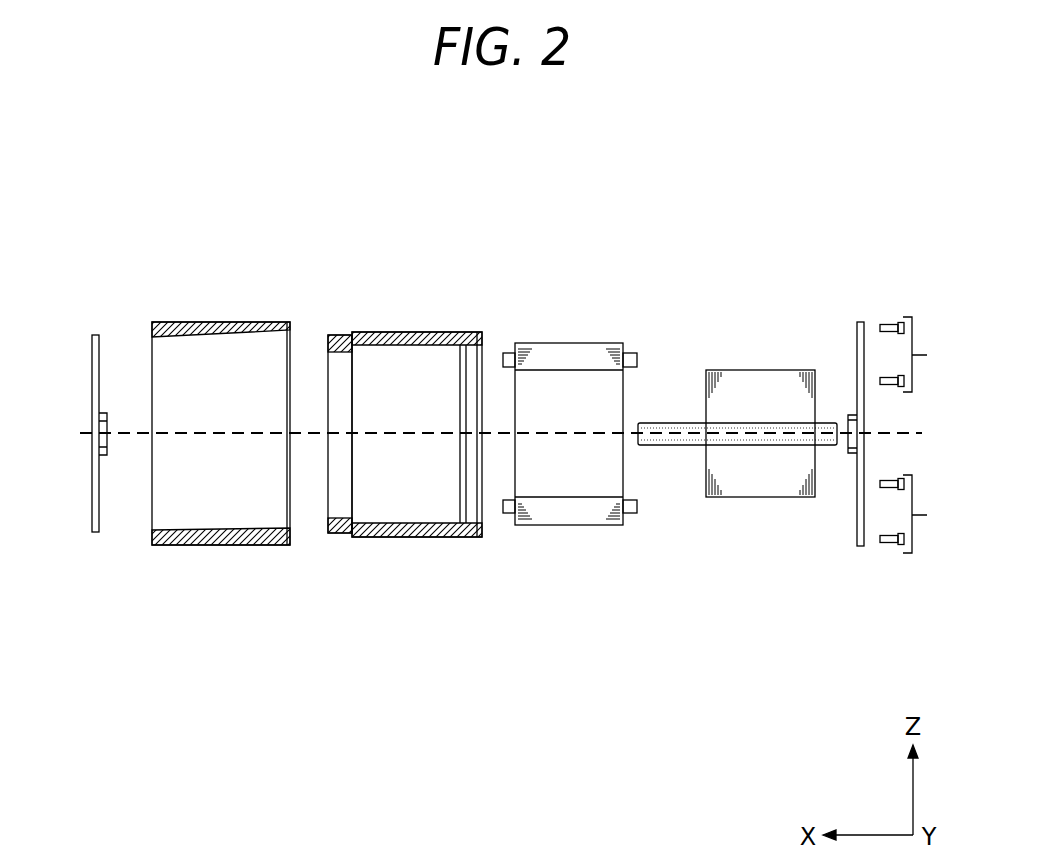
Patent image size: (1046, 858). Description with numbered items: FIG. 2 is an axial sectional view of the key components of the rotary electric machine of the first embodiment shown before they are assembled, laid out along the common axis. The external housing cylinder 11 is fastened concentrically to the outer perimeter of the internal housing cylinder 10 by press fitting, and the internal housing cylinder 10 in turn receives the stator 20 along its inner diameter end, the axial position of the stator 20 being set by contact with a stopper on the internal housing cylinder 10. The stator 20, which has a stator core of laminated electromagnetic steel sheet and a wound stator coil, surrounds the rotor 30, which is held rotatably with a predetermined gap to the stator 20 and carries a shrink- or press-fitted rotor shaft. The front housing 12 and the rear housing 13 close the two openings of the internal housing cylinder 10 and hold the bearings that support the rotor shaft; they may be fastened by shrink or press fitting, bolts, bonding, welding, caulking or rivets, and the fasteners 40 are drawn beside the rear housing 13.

The internal housing cylinder 10 is at (422, 334).
The external housing cylinder 11 is at (227, 324).
The front housing 12 is at (93, 362).
The rear housing 13 is at (859, 362).
The stator 20 is at (565, 362).
The rotor 30 is at (765, 382).
The screws 40 is at (927, 355).